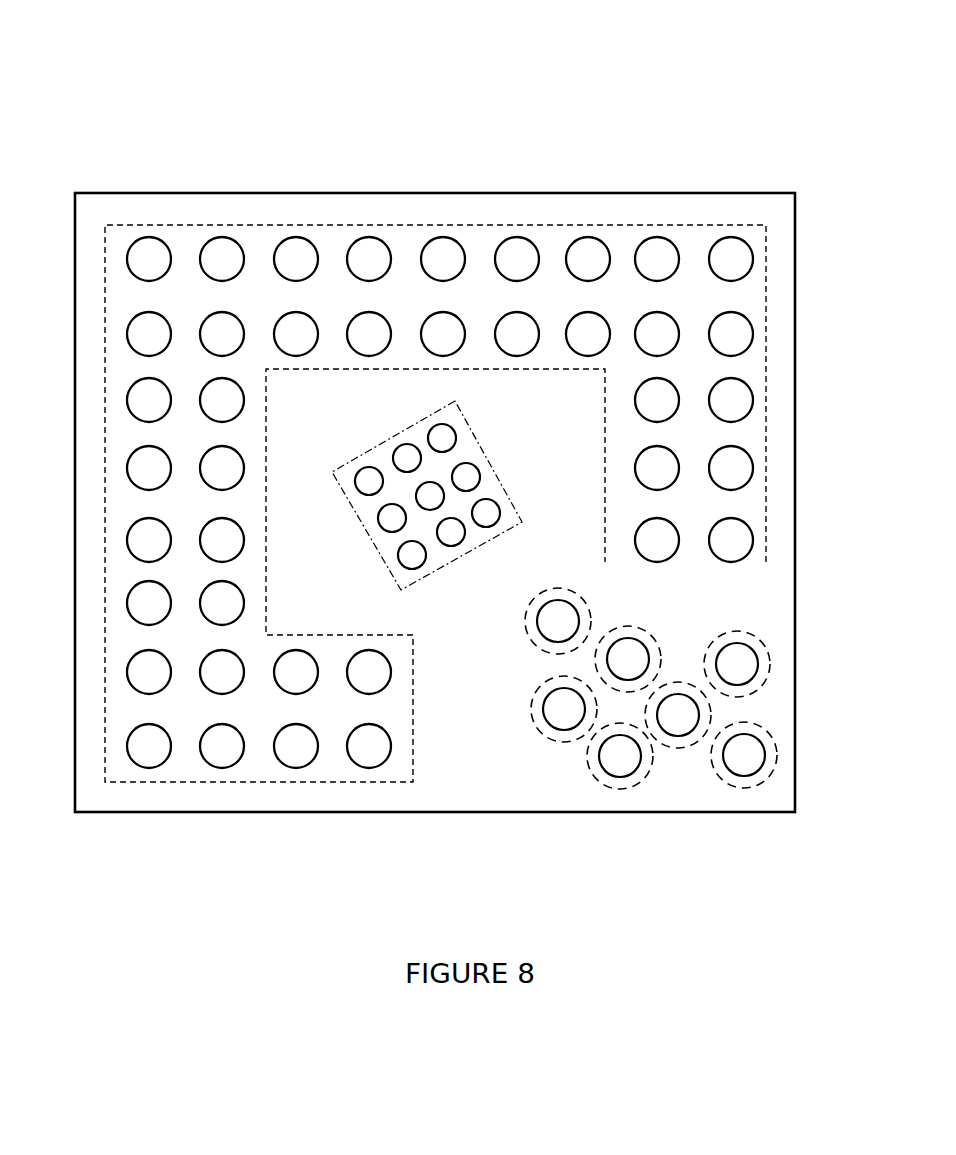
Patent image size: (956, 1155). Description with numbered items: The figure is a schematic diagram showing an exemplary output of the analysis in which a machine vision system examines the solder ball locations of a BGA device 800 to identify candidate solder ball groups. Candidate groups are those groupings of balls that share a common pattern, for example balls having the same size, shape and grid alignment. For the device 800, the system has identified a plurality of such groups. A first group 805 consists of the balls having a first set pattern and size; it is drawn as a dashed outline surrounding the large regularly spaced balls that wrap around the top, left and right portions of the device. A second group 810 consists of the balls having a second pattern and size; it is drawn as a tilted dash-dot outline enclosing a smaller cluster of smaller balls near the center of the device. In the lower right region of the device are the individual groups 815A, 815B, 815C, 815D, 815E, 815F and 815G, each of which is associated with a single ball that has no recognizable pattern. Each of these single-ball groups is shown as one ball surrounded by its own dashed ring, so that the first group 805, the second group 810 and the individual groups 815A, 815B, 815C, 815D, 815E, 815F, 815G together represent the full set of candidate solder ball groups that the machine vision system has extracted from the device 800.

The device 800 is at (736, 72).
The first group 805 is at (583, 371).
The second group 810 is at (477, 434).
The individual group 815A is at (583, 598).
The individual group 815B is at (647, 637).
The individual group 815C is at (737, 636).
The individual group 815D is at (718, 768).
The individual group 815E is at (678, 747).
The individual group 815F is at (588, 757).
The individual group 815G is at (532, 717).